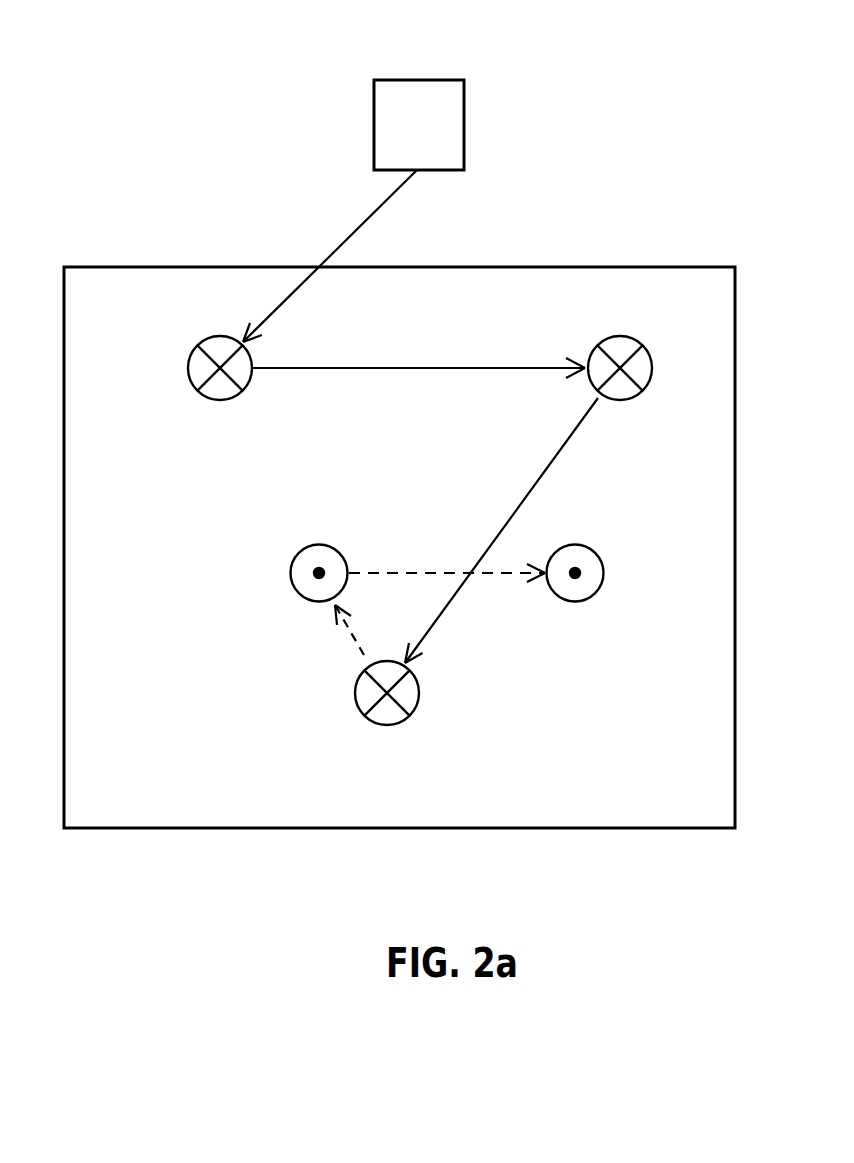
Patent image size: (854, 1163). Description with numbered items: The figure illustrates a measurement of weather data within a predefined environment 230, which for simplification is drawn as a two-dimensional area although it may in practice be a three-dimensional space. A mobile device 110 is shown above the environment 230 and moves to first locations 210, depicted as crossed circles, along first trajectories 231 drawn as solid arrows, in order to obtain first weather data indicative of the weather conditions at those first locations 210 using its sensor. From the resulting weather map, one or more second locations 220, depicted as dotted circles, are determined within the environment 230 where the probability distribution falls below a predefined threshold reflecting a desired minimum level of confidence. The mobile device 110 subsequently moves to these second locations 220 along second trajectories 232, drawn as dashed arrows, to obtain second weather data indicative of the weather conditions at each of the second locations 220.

The mobile device 110 is at (436, 80).
The environment 230 is at (148, 252).
The first locations 210 is at (188, 362).
The second locations 220 is at (290, 572).
The first trajectories 231 is at (418, 365).
The second trajectories 232 is at (388, 572).